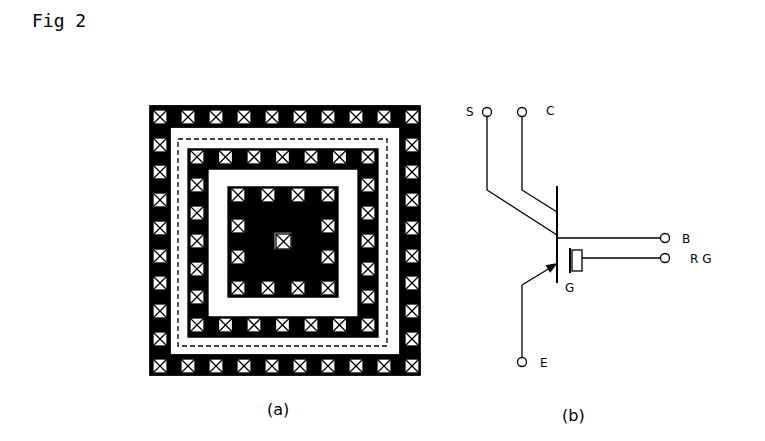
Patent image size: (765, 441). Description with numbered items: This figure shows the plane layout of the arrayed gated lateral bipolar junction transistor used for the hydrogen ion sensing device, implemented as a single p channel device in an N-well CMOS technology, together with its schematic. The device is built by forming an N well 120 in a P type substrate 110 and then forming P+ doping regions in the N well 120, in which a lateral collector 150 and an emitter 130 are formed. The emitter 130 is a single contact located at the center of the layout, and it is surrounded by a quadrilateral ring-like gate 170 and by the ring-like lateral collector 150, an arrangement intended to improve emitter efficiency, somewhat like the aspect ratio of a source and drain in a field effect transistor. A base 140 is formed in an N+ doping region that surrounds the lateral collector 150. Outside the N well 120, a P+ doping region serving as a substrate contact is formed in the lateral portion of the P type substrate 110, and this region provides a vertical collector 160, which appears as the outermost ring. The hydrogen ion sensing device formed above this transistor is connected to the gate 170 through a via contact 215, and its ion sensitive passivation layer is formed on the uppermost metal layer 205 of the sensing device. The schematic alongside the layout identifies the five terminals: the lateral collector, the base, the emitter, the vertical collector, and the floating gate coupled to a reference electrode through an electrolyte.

The uppermost metal layer 205 is at (148, 120).
The via contact 215 is at (148, 140).
The P type substrate 110 is at (150, 167).
The N well 120 is at (192, 185).
The emitter 130 is at (276, 242).
The gate 170 is at (252, 258).
The lateral collector 150 is at (228, 274).
The base 140 is at (188, 290).
The vertical collector 160 is at (163, 305).